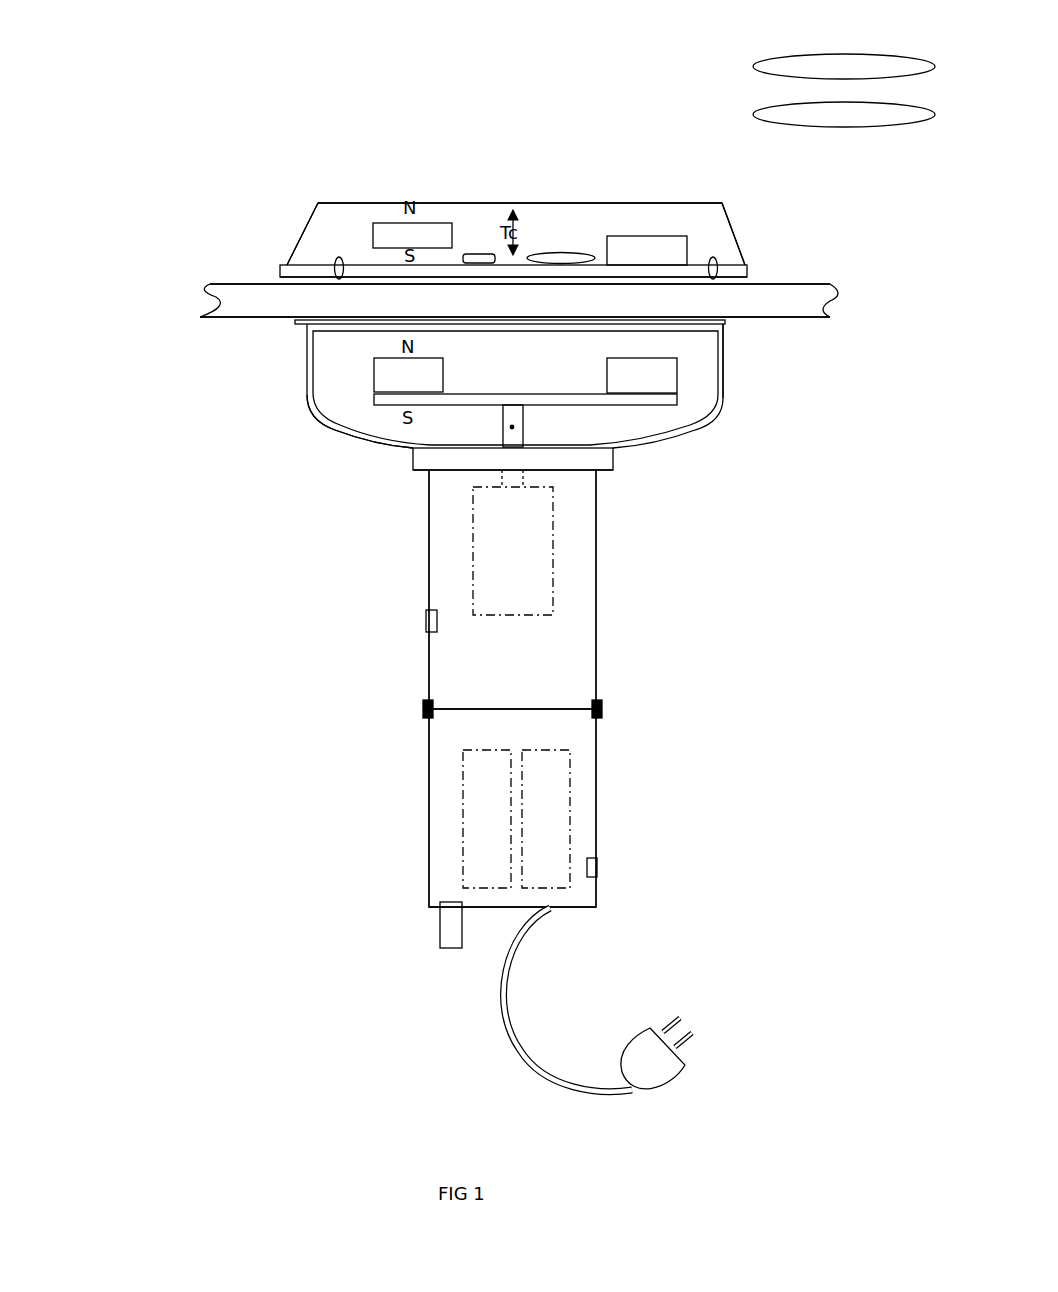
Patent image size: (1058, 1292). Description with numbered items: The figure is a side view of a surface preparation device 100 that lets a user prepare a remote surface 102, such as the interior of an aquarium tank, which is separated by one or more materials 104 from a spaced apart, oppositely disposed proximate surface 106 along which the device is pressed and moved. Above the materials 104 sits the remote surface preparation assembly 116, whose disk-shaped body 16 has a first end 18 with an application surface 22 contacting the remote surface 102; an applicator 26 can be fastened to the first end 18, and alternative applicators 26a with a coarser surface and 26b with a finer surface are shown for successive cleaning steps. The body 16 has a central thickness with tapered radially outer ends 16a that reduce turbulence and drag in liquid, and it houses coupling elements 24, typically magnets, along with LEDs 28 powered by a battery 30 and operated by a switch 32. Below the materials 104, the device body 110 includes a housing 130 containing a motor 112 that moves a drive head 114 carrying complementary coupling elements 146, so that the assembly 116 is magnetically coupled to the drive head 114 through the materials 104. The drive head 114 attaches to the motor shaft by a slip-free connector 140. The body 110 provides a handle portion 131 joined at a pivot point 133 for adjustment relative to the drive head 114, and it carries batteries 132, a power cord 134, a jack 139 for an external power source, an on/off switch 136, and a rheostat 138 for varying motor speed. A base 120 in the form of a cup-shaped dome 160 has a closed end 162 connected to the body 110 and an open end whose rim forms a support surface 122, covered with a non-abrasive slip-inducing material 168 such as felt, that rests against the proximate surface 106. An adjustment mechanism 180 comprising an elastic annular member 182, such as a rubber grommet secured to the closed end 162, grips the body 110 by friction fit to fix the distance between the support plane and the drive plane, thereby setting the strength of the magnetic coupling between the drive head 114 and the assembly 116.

The surface preparation device 100 is at (172, 634).
The remote surface 102 is at (253, 278).
The materials 104 is at (866, 285).
The proximate surface 106 is at (230, 318).
The body 16 is at (353, 202).
The tapered radially outer ends 16a is at (308, 235).
The first end 18 is at (747, 265).
The application surface 22 is at (377, 278).
The coupling elements 24 is at (373, 227).
The applicator 26 is at (758, 269).
The applicator having a coarser surface 26a is at (755, 115).
The applicator having a finer surface 26b is at (755, 65).
The LEDs 28 is at (338, 262).
The battery 30 is at (480, 254).
The switch 32 is at (562, 252).
The remote surface preparation assembly 116 is at (742, 211).
The non-abrasive slip-inducing material 168 is at (295, 323).
The base 120 is at (713, 413).
The support surface 122 is at (727, 318).
The cup-shaped dome 160 is at (323, 425).
The closed end 162 is at (377, 445).
The coupling elements 146 is at (525, 375).
The drive head 114 is at (525, 392).
The connector 140 is at (525, 425).
The elastic annular member 182 is at (613, 472).
The adjustment mechanism 180 is at (614, 486).
The body 110 is at (597, 633).
The motor 112 is at (512, 615).
The housing 130 is at (592, 690).
The handle portion 131 is at (427, 773).
The batteries 132 is at (516, 819).
The pivot point 133 is at (423, 712).
The on/off switch 136 is at (420, 636).
The jack 139 is at (600, 867).
The rheostat 138 is at (440, 947).
The power cord 134 is at (542, 1053).